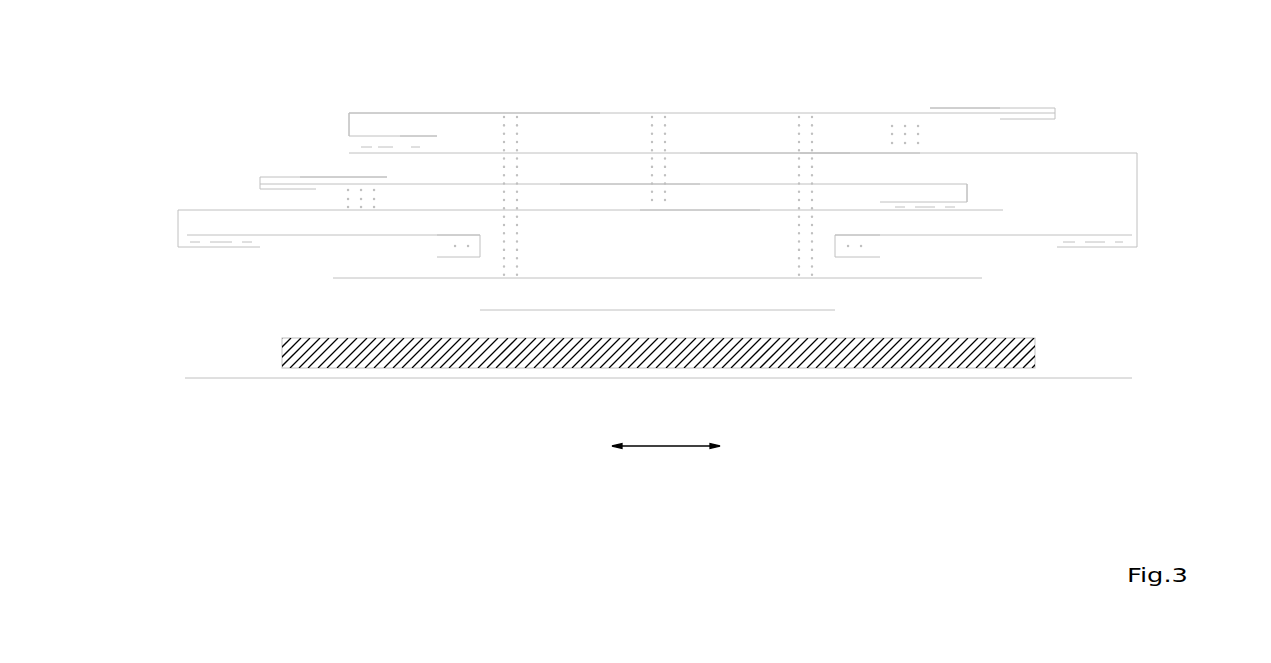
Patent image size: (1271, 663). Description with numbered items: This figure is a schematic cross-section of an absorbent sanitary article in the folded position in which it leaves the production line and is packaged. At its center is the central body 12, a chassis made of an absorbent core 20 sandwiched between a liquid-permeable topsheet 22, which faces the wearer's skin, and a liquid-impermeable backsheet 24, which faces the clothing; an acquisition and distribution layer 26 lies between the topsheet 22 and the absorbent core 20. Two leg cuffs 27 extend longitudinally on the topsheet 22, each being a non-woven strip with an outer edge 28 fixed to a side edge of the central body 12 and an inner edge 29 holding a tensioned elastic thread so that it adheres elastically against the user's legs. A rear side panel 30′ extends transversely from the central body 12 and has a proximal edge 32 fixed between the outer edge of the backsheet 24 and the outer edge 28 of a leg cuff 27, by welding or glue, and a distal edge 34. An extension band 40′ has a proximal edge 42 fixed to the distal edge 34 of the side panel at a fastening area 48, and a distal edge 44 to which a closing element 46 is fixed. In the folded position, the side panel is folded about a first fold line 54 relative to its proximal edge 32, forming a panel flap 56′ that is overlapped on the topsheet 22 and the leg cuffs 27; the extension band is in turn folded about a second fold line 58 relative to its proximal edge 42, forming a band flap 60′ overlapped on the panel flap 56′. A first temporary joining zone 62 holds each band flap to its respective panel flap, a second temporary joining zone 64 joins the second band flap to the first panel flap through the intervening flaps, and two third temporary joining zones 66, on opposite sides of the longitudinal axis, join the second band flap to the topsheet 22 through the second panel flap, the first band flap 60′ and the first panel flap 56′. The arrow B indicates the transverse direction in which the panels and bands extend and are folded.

The central body 12 is at (1146, 302).
The absorbent core 20 is at (817, 355).
The topsheet 22 is at (927, 279).
The backsheet 24 is at (527, 378).
The acquisition and distribution layer 26 is at (808, 310).
The leg cuff 27 is at (302, 235).
The outer edge 28 is at (201, 237).
The inner edge 29 is at (470, 235).
The first rear side panel 30′ is at (600, 200).
The proximal edge 32 is at (250, 248).
The distal edge 34 is at (360, 153).
The first extension band 40′ is at (534, 176).
The proximal edge 42 is at (430, 137).
The distal edge 44 is at (1048, 112).
The closing element 46 is at (1025, 108).
The fastening area 48 is at (402, 153).
The first fold line 54 is at (1138, 168).
The first panel flap 56′ is at (690, 210).
The second fold line 58 is at (348, 127).
The first band flap 60′ is at (627, 184).
The first temporary joining zone 62 is at (360, 198).
The second temporary joining zone 64 is at (652, 172).
The third temporary joining zone 66 is at (505, 172).
The sliding direction B is at (670, 446).